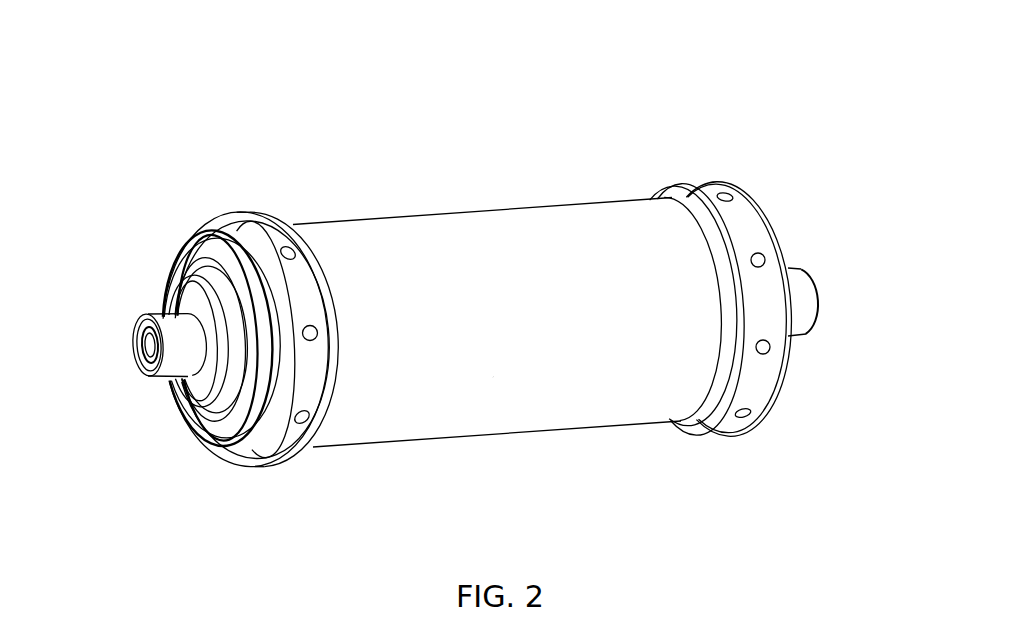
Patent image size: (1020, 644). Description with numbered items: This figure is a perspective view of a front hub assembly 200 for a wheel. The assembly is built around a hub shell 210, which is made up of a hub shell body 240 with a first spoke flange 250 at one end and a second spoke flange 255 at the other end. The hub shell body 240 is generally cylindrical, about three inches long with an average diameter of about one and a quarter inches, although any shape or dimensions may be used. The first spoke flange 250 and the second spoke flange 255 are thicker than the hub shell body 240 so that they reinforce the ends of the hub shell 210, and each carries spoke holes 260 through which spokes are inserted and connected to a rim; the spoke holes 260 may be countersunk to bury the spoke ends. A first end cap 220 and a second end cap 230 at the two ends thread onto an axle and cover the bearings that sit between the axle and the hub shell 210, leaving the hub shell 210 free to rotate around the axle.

The front hub assembly 200 is at (148, 74).
The hub shell 210 is at (587, 203).
The first end cap 220 is at (218, 258).
The second end cap 230 is at (807, 297).
The hub shell body 240 is at (493, 377).
The first spoke flange 250 is at (272, 221).
The second spoke flange 255 is at (748, 225).
The spoke holes 260 is at (293, 253).